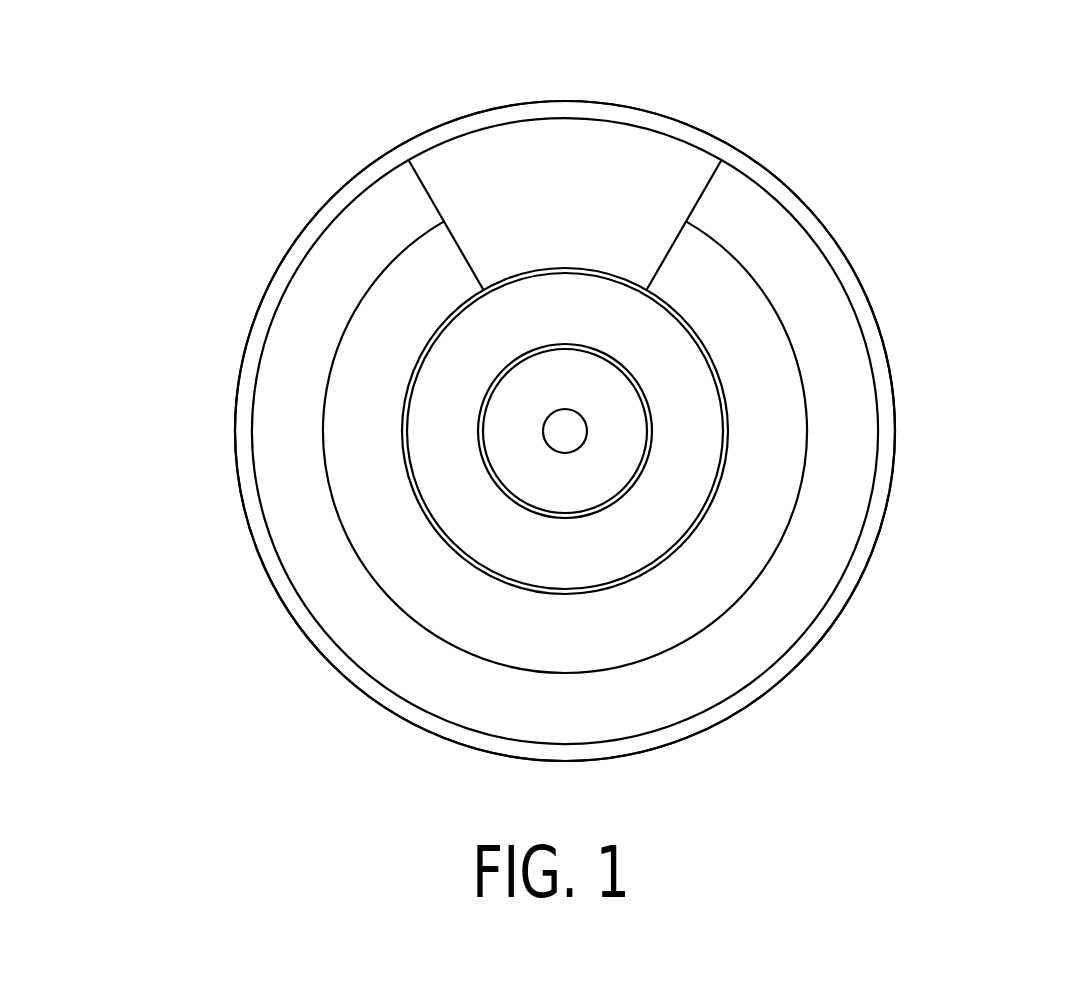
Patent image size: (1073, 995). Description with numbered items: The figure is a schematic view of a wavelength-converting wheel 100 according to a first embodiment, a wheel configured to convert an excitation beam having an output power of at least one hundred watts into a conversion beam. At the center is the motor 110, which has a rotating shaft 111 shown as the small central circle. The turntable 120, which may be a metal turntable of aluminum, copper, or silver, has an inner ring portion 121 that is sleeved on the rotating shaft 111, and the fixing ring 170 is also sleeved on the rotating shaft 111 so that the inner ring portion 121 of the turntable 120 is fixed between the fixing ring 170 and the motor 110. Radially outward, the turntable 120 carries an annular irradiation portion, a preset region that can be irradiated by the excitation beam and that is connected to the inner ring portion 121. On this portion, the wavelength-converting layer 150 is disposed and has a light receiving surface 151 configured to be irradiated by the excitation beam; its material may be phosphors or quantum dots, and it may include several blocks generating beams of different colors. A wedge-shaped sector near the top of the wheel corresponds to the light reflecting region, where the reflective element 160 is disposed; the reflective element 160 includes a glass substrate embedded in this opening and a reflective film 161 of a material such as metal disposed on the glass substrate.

The wavelength-converting wheel 100 is at (140, 145).
The motor 110 is at (580, 487).
The rotating shaft 111 is at (597, 470).
The turntable 120 is at (842, 265).
The inner ring portion 121 is at (745, 315).
The wavelength-converting layer 150 is at (787, 238).
The light receiving surface 151 is at (760, 213).
The reflective element 160 is at (530, 150).
The reflective film 161 is at (585, 148).
The fixing ring 170 is at (695, 423).